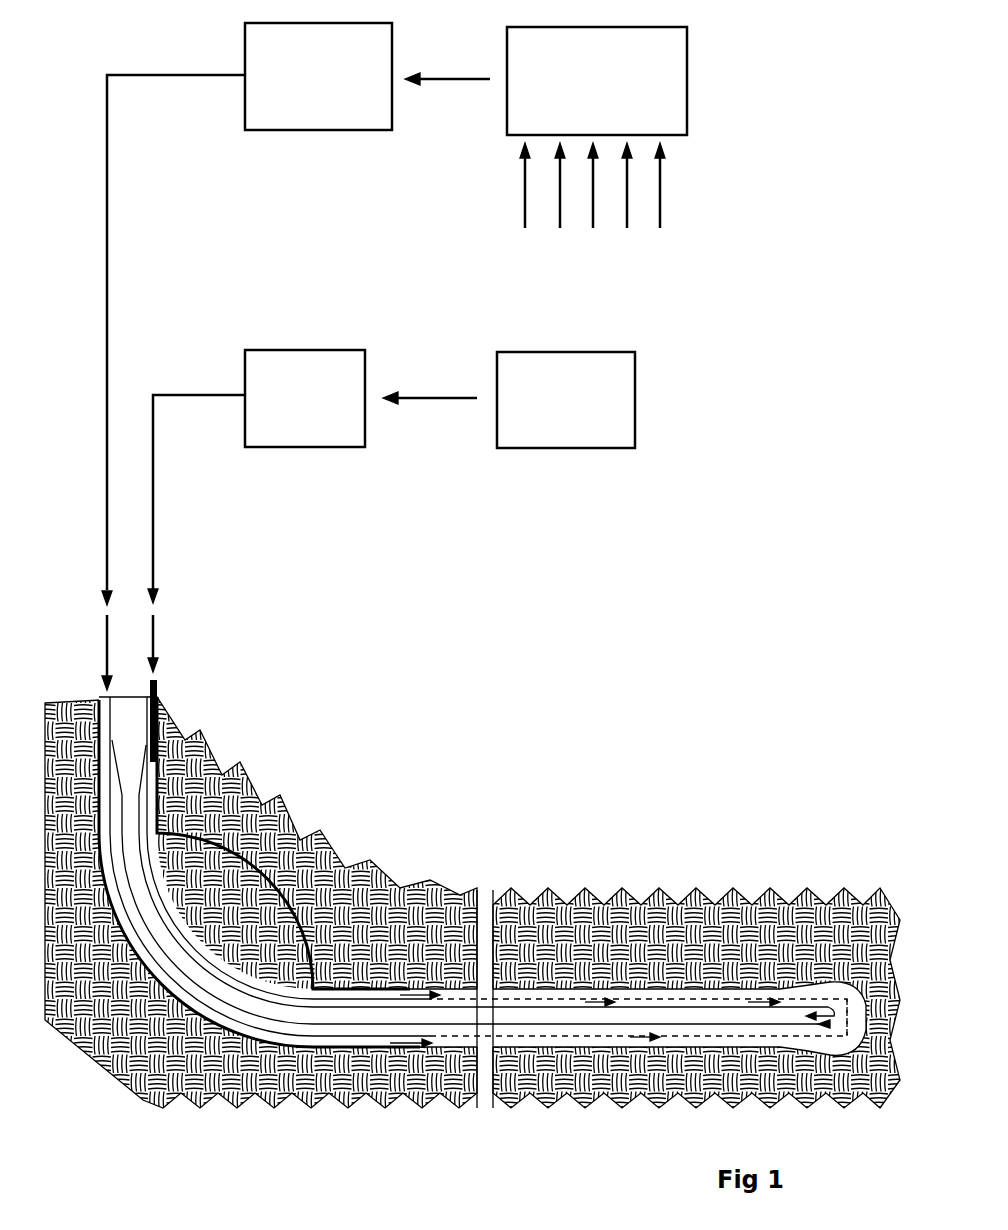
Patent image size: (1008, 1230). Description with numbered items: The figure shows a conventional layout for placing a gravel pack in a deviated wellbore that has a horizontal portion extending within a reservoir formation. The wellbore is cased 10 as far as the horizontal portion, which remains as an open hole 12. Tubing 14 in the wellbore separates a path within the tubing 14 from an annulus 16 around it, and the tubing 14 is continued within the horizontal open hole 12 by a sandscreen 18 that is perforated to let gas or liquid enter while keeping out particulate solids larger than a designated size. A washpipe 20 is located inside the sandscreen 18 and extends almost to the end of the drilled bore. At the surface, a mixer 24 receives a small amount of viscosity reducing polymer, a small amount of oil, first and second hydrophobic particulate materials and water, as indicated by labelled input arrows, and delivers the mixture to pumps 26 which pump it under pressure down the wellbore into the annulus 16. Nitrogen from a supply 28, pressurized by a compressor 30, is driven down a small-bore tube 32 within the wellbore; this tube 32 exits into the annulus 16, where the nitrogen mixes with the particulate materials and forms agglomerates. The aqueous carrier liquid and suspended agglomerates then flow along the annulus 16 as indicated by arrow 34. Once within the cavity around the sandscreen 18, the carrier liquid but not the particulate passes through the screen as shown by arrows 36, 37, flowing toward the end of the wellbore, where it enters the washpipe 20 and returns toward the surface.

The casing 10 is at (345, 982).
The open hole 12 is at (742, 975).
The tubing 14 is at (300, 893).
The annulus 16 is at (155, 860).
The sandscreen 18 is at (672, 1000).
The washpipe 20 is at (530, 1017).
The mixer 24 is at (546, 147).
The pumps 26 is at (247, 356).
The nitrogen supply 28 is at (509, 400).
The compressor 30 is at (256, 511).
The small-bore tube 32 is at (152, 683).
The flow arrow 34 is at (420, 1043).
The flow arrow 36 is at (588, 1000).
The flow arrow 37 is at (842, 1037).